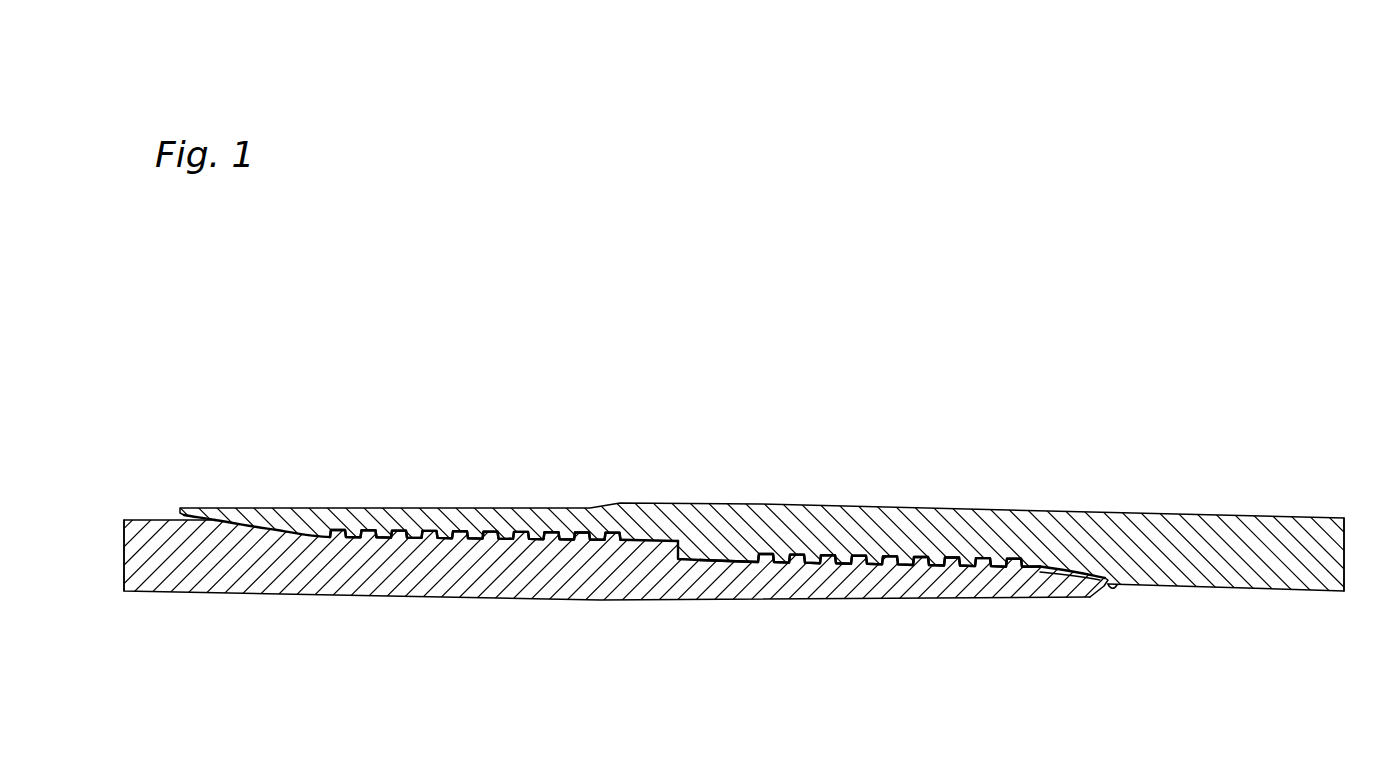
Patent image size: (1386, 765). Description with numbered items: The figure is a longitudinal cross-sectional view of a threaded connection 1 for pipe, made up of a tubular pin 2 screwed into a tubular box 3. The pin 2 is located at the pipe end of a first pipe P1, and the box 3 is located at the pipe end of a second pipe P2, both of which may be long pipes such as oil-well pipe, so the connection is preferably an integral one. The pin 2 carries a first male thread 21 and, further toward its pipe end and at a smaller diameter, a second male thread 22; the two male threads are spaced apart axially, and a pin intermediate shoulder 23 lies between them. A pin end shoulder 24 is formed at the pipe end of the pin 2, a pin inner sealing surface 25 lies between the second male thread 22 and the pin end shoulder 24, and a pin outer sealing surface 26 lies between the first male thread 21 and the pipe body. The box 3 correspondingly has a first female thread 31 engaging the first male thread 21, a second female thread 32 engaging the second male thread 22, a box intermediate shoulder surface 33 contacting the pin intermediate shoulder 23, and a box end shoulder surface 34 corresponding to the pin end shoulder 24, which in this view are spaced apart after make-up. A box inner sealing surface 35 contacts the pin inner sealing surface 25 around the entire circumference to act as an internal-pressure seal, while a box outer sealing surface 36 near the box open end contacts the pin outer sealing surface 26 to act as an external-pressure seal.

The threaded connection for pipe 1 is at (693, 477).
The pin 2 is at (785, 606).
The box 3 is at (735, 500).
The first male thread 21 is at (462, 542).
The second male thread 22 is at (880, 570).
The pin intermediate shoulder 23 is at (686, 561).
The pin end shoulder 24 is at (1107, 583).
The pin inner sealing surface 25 is at (1050, 580).
The pin outer sealing surface 26 is at (283, 525).
The first female thread 31 is at (470, 532).
The second female thread 32 is at (949, 578).
The box intermediate shoulder surface 33 is at (651, 528).
The box end shoulder surface 34 is at (1110, 588).
The box inner sealing surface 35 is at (1086, 578).
The box outer sealing surface 36 is at (222, 518).
The first pipe P1 is at (140, 518).
The second pipe P2 is at (1337, 518).